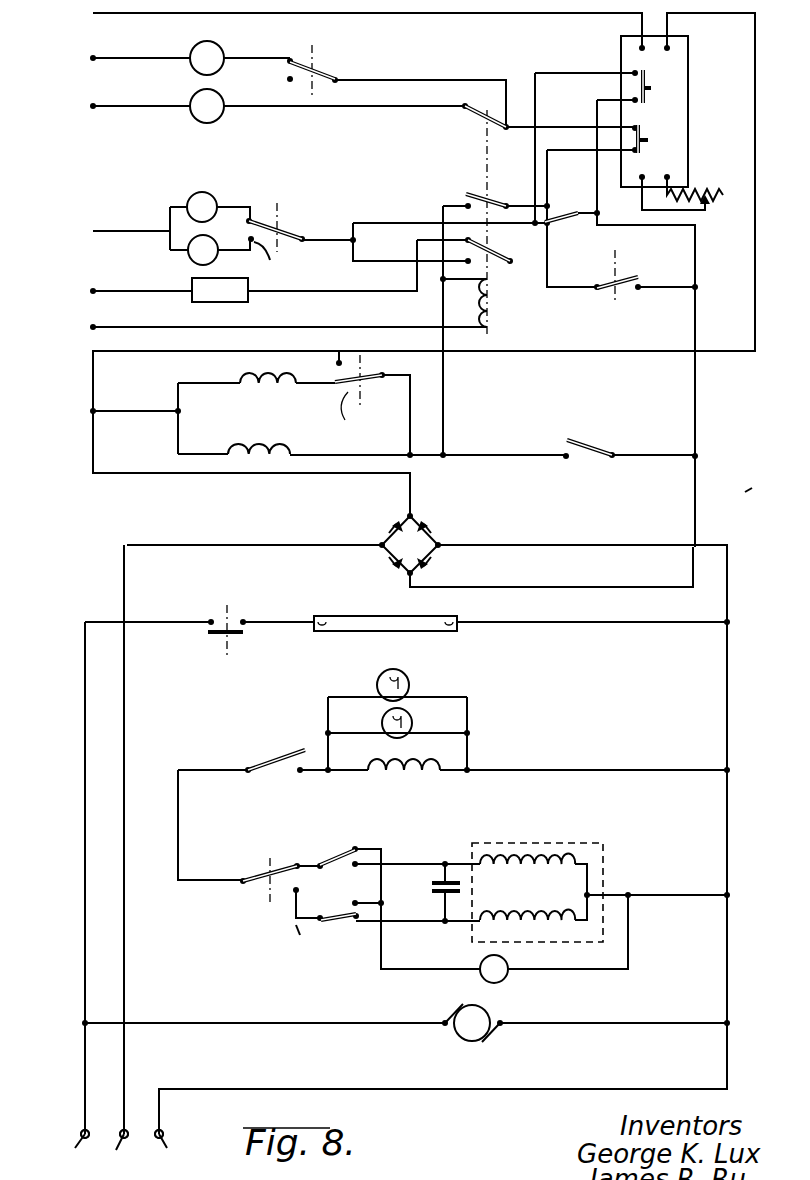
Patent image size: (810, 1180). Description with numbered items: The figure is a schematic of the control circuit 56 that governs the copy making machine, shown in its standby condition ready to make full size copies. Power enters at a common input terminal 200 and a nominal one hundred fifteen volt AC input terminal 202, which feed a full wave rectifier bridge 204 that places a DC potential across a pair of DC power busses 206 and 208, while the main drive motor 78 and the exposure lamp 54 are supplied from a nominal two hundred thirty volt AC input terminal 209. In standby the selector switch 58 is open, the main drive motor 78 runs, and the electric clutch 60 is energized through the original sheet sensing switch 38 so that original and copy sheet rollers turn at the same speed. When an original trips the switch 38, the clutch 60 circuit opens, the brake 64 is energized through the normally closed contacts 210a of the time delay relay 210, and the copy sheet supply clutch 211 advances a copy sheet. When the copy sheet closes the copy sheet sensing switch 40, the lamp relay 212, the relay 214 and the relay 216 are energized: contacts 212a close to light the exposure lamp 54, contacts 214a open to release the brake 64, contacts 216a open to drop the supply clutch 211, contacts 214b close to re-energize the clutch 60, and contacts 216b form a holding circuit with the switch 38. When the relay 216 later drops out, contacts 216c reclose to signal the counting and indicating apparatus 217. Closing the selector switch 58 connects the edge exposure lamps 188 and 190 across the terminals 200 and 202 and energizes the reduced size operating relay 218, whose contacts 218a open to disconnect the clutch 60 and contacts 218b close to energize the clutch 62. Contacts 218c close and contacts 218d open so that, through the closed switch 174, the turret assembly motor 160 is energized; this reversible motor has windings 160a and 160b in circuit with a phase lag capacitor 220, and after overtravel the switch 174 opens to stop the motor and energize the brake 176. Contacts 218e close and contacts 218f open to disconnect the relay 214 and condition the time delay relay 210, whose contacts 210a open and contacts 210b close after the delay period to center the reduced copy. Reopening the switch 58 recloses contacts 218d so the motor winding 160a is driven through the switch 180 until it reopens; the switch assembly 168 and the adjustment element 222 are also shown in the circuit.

The original sheet sensing switch 38 is at (561, 211).
The copy sheet sensing switch 40 is at (586, 444).
The exposure lamp 54 is at (333, 633).
The control circuit 56 is at (752, 490).
The selector switch 58 is at (282, 754).
The electric clutch 60 is at (205, 192).
The clutch 62 is at (188, 255).
The brake 64 is at (222, 49).
The main drive motor 78 is at (462, 1041).
The turret assembly motor 160 is at (555, 843).
The motor winding 160a is at (500, 855).
The motor winding 160b is at (545, 898).
The switch assembly 168 is at (300, 936).
The switch 174 is at (336, 854).
The brake 176 is at (503, 978).
The switch 180 is at (346, 922).
The edge exposure lamp 188 is at (410, 678).
The edge exposure lamp 190 is at (412, 722).
The common input terminal 200 is at (170, 1152).
The 115 volt AC input terminal 202 is at (116, 1150).
The full wave rectifier bridge 204 is at (418, 518).
The DC power bus 206 is at (92, 385).
The DC power bus 208 is at (696, 405).
The 230-volt AC input terminal 209 is at (75, 1148).
The time delay relay 210 is at (688, 158).
The normally closed contacts 210a is at (643, 133).
The normally open contacts 210b is at (648, 83).
The copy sheet supply clutch 211 is at (218, 117).
The lamp relay 212 is at (245, 442).
The normally open contacts 212a is at (214, 637).
The relay 214 is at (250, 372).
The normally closed contacts 214a is at (322, 68).
The normally open contacts 214b is at (628, 270).
The relay 216 is at (497, 326).
The normally closed contacts 216a is at (480, 116).
The normally open contacts 216b is at (468, 190).
The normally closed contacts 216c is at (500, 266).
The counting and indicating apparatus 217 is at (232, 301).
The reduced size operating relay 218 is at (400, 782).
The normally closed contacts 218a is at (255, 218).
The normally open contacts 218b is at (255, 243).
The normally open contacts 218c is at (295, 892).
The normally closed contacts 218d is at (292, 862).
The normally open contacts 218e is at (338, 362).
The normally closed contacts 218f is at (350, 392).
The phase lag capacitor 220 is at (432, 880).
The variable resistor 222 is at (706, 192).